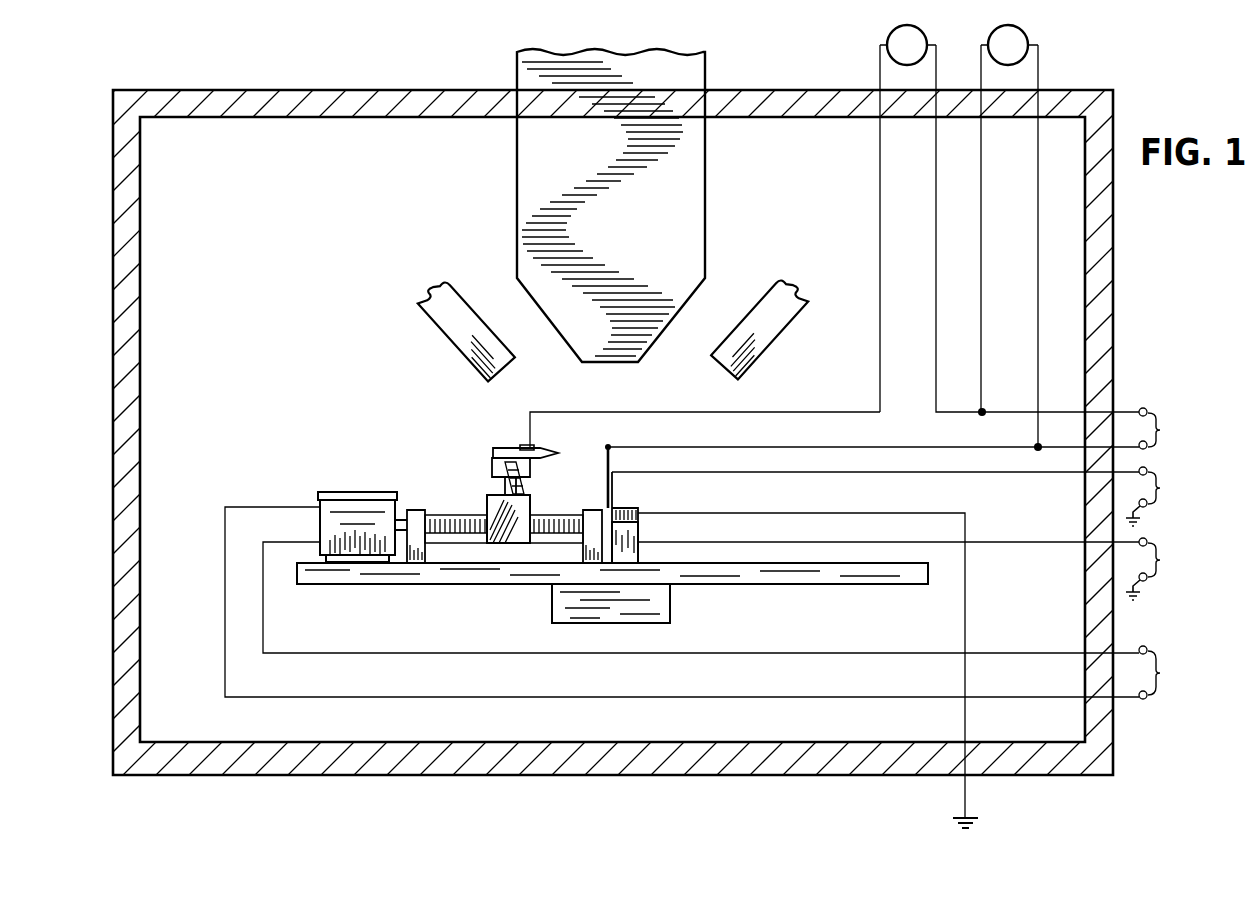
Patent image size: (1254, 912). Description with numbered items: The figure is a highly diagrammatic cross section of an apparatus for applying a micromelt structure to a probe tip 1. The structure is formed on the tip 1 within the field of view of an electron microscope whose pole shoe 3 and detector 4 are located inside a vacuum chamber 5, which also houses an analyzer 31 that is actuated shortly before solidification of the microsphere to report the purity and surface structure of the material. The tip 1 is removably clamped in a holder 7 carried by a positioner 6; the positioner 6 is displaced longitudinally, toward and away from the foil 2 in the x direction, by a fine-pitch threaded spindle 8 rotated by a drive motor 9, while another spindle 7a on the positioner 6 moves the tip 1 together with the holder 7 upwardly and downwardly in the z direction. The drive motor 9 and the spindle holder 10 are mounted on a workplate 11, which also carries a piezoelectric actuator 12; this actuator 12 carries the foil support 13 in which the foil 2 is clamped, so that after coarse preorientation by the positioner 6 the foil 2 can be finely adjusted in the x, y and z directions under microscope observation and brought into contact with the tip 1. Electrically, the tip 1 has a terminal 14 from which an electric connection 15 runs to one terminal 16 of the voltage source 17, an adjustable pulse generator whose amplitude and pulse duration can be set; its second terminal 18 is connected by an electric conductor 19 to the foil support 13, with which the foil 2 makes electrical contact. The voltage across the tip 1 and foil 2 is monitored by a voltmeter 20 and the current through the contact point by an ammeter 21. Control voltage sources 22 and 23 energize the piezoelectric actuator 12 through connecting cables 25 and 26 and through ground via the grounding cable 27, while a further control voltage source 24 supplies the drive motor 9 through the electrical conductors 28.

The probe tip 1 is at (500, 446).
The foil 2 is at (604, 455).
The pole shoe 3 is at (535, 183).
The detector 4 is at (772, 322).
The vacuum chamber 5 is at (280, 199).
The positioner 6 is at (490, 507).
The holder 7 is at (495, 467).
The spindle 7a is at (518, 480).
The threaded spindle 8 is at (440, 511).
The drive motor 9 is at (353, 500).
The spindle holder 10 is at (455, 564).
The workplate 11 is at (666, 605).
The piezoelectric actuator 12 is at (640, 530).
The foil support 13 is at (615, 483).
The electrical terminal 14 is at (526, 445).
The electric connection 15 is at (634, 404).
The terminal 16 is at (1143, 407).
The voltage source 17 is at (1170, 427).
The second terminal 18 is at (1148, 448).
The electric conductor 19 is at (853, 437).
The voltmeter 20 is at (1022, 35).
The ammeter 21 is at (894, 37).
The control voltage source 22 is at (1159, 496).
The control voltage source 23 is at (1159, 569).
The control voltage source 24 is at (1165, 672).
The connecting cable 25 is at (764, 470).
The connecting cable 26 is at (990, 532).
The grounding cable 27 is at (886, 502).
The electrical conductors 28 is at (814, 684).
The analyzer 31 is at (442, 323).